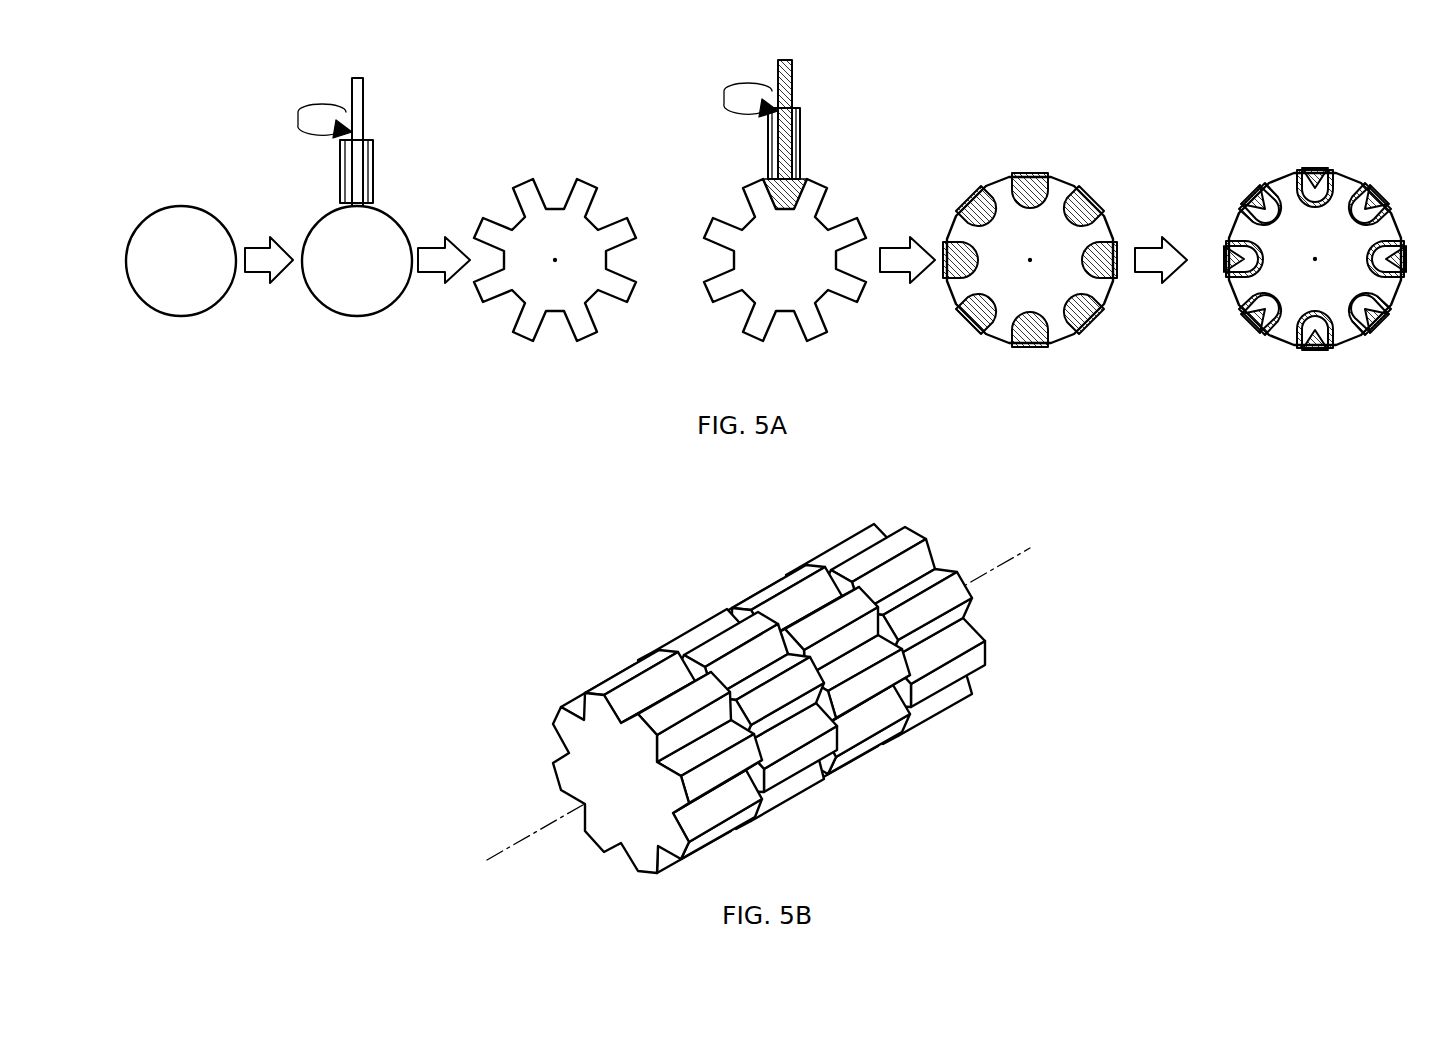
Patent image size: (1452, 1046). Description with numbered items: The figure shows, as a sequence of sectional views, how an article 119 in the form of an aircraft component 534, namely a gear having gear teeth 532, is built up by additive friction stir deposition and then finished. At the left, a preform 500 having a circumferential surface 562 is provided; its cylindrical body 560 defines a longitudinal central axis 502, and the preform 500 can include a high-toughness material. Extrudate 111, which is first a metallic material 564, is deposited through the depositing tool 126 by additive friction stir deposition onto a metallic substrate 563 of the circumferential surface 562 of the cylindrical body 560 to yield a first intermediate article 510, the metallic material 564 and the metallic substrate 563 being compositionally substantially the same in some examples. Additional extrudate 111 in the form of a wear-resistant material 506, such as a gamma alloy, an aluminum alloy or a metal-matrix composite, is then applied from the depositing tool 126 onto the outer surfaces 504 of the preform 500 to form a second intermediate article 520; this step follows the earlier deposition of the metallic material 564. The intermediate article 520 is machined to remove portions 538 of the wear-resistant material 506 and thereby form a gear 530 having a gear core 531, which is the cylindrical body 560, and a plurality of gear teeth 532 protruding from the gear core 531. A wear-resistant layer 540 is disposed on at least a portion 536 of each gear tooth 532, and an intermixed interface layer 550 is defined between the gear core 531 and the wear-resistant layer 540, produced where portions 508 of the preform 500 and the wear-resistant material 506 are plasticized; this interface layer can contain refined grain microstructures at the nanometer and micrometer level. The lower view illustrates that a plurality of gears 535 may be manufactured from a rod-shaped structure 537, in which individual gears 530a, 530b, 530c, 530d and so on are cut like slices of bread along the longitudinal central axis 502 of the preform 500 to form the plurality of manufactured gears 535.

In FIG. 5A, the preform 500 is at (213, 195).
In FIG. 5A, the cylindrical body 560 is at (148, 237).
In FIG. 5A, the circumferential surface 562 is at (181, 206).
In FIG. 5A, the metallic substrate 563 is at (383, 318).
In FIG. 5A, the rod 126 is at (358, 72).
In FIG. 5A, the metallic material 564 is at (362, 142).
In FIG. 5A, the extrudate 111 is at (375, 202).
In FIG. 5A, the first intermediate article 510 is at (597, 155).
In FIG. 5A, the longitudinal central axis 502 is at (555, 260).
In FIG. 5B, the longitudinal central axis 502 is at (527, 838).
In FIG. 5A, the portions of the preform and wear-resistant material 508 is at (598, 317).
In FIG. 5A, the wear-resistant material 506 is at (792, 192).
In FIG. 5A, the outer surfaces 504 is at (798, 333).
In FIG. 5A, the second intermediate article 520 is at (1073, 163).
In FIG. 5A, the gear 530 is at (1343, 147).
In FIG. 5A, the article 119 is at (1290, 137).
In FIG. 5A, the aircraft component 534 is at (1367, 173).
In FIG. 5A, the portions of the wear-resistant material 538 is at (1402, 250).
In FIG. 5A, the intermixed interface layer 550 is at (1262, 197).
In FIG. 5A, the wear-resistant layer 540 is at (1228, 250).
In FIG. 5A, the portion of each gear tooth 536 is at (1383, 262).
In FIG. 5A, the gear teeth 532 is at (1233, 293).
In FIG. 5B, the gear teeth 532 is at (568, 772).
In FIG. 5A, the gear core 531 is at (1355, 277).
In FIG. 5B, the individual gear 530a is at (610, 676).
In FIG. 5B, the individual gear 530b is at (680, 636).
In FIG. 5B, the individual gear 530c is at (753, 590).
In FIG. 5B, the individual gear 530d is at (827, 550).
In FIG. 5B, the plurality of gears 535 is at (1020, 602).
In FIG. 5B, the rod-shaped structure 537 is at (985, 710).